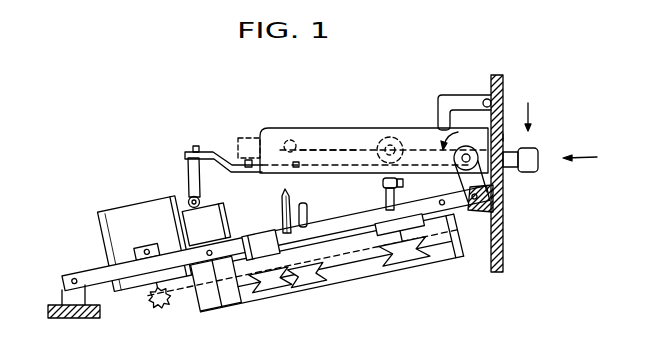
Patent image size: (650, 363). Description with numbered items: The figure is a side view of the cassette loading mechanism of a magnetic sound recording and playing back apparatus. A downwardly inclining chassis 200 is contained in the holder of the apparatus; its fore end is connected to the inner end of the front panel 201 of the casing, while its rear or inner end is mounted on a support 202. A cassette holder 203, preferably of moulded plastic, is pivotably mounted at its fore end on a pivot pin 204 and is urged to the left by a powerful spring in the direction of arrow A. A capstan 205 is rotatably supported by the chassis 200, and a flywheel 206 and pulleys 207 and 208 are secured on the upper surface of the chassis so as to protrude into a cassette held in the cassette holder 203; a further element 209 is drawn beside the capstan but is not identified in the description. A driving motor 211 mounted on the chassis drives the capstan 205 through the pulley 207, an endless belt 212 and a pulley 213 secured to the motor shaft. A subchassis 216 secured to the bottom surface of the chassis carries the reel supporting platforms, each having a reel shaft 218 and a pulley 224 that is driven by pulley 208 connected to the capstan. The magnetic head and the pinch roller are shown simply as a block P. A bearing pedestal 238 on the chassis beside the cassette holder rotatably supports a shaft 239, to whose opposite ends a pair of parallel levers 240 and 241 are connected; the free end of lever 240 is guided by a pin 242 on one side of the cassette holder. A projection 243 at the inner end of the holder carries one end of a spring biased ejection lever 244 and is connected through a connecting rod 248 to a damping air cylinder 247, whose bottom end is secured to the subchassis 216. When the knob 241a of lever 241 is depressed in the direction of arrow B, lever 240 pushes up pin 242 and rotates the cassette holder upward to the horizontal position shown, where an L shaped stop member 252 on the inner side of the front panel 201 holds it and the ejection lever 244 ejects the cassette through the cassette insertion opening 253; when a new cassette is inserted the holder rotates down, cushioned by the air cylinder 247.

The chassis 200 is at (98, 272).
The front panel 201 is at (505, 80).
The support 202 is at (62, 296).
The cassette holder 203 is at (316, 128).
The pivot pin 204 is at (472, 160).
The capstan 205 is at (281, 196).
The flywheel 206 is at (262, 263).
The pulley 207 is at (277, 278).
The pulley 208 is at (316, 278).
The stop pin 209 is at (290, 212).
The driving motor 211 is at (106, 204).
The endless belt 212 is at (188, 287).
The pulley 213 is at (145, 303).
The subchassis 216 is at (437, 260).
The reel shaft 218 is at (382, 185).
The pulley 224 is at (393, 264).
The bearing pedestal 238 is at (403, 179).
The shaft 239 is at (386, 138).
The lever 240 is at (337, 150).
The lever 241 is at (415, 150).
The knob 241a is at (540, 166).
The pin 242 is at (290, 138).
The projection 243 is at (214, 151).
The ejection lever 244 is at (233, 160).
The air cylinder 247 is at (212, 235).
The connecting rod 248 is at (186, 172).
The L shaped stop member 252 is at (443, 95).
The cassette insertion opening 253 is at (503, 137).
The block P is at (248, 140).
The arrow A is at (590, 149).
The arrow B is at (530, 108).